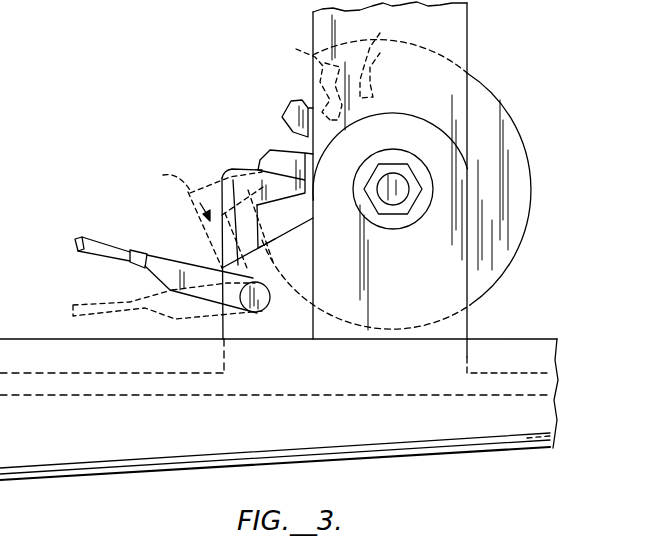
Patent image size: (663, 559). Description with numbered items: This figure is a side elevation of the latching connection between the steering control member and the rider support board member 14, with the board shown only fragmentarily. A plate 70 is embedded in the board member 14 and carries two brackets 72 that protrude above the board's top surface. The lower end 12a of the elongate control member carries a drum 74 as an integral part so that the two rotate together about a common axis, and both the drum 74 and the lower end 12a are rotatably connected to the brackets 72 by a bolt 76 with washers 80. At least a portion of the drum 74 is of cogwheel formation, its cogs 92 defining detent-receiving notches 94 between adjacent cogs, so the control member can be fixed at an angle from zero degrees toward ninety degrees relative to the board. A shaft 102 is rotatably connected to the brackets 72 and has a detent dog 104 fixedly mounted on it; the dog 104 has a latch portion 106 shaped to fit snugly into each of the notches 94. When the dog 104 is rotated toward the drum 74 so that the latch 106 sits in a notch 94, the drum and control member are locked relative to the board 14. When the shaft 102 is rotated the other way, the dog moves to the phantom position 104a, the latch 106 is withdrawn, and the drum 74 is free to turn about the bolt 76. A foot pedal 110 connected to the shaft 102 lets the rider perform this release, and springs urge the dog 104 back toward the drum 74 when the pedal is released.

The lower end 12a is at (452, 28).
The rider support board member 14 is at (550, 433).
The plate 70 is at (540, 383).
The brackets 72 is at (450, 272).
The drum 74 is at (513, 212).
The bolt 76 is at (378, 207).
The washers 80 is at (418, 212).
The cogs 92 is at (300, 51).
The detent-receiving notches 94 is at (297, 145).
The shaft 102 is at (266, 307).
The detent dog 104 is at (236, 181).
The phantom position of dog 104a is at (170, 175).
The latch portion 106 is at (275, 233).
The foot pedal 110 is at (76, 240).